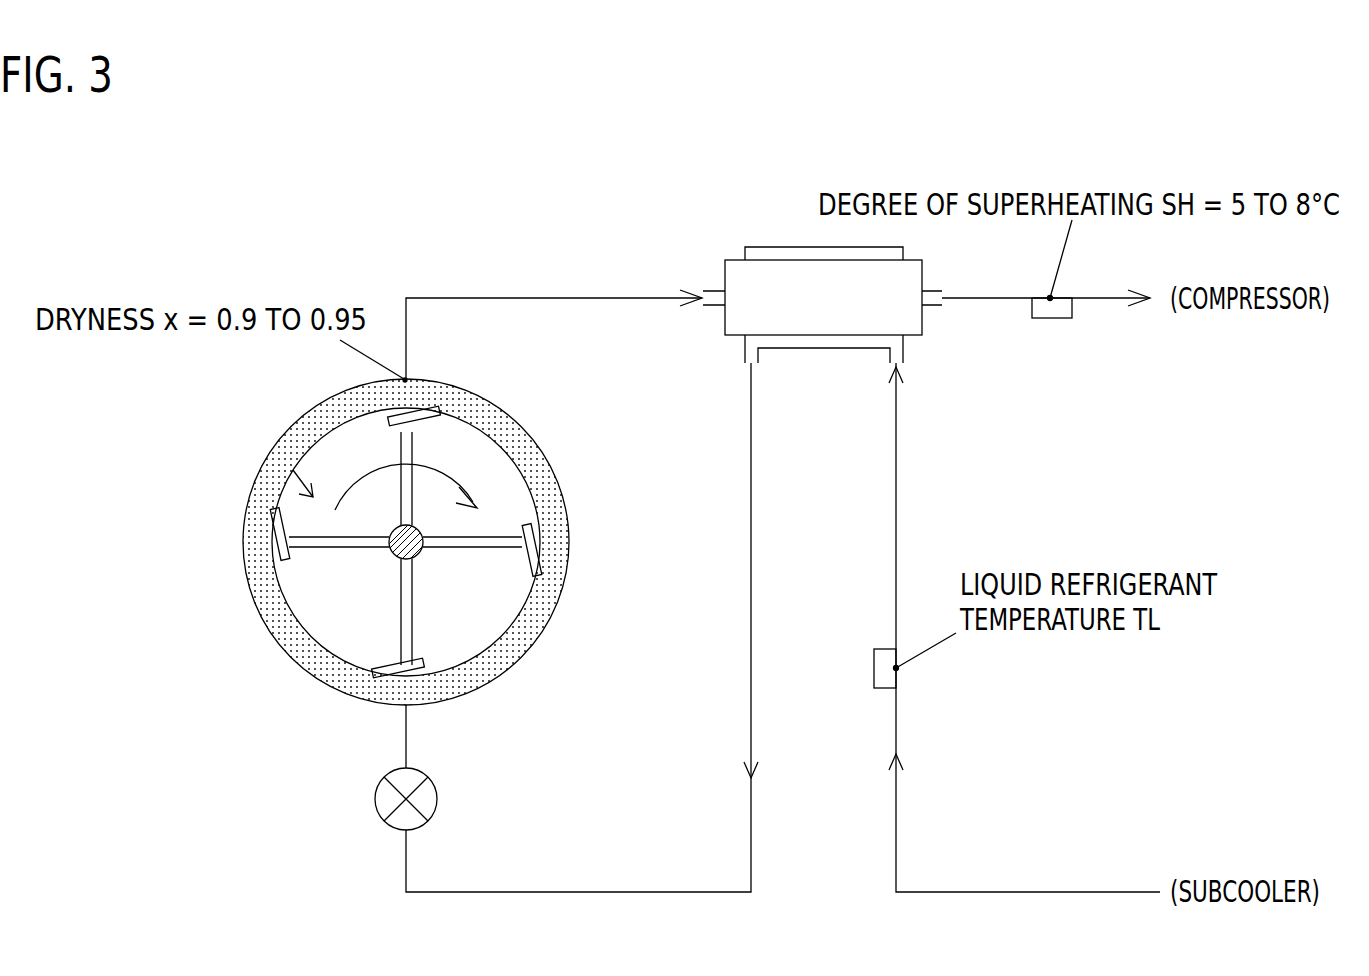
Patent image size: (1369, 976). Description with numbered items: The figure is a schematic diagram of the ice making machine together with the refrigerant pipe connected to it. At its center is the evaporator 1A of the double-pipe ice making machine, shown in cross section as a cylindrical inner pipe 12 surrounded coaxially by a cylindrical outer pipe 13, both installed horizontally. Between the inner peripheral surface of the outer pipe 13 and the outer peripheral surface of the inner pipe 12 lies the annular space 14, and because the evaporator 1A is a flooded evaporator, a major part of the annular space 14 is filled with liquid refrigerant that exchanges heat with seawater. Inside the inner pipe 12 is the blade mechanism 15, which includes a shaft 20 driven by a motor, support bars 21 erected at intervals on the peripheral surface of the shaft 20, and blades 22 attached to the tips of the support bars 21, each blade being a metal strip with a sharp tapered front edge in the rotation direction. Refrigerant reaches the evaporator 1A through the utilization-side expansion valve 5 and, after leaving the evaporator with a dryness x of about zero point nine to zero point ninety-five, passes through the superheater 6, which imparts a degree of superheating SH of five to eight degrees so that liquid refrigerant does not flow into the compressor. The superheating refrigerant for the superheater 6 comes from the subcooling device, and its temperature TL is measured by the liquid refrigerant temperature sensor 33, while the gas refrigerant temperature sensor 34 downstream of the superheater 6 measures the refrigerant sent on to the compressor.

The evaporator 1A is at (358, 549).
The utilization-side expansion valve 5 is at (374, 803).
The superheater 6 is at (748, 235).
The inner pipe 12 is at (536, 640).
The outer pipe 13 is at (278, 644).
The annular space 14 is at (548, 596).
The blade mechanism 15 is at (268, 456).
The shaft 20 is at (418, 555).
The support bars 21 is at (340, 548).
The blades 22 is at (272, 562).
The liquid refrigerant temperature sensor 33 is at (874, 680).
The gas refrigerant temperature sensor 34 is at (1058, 320).